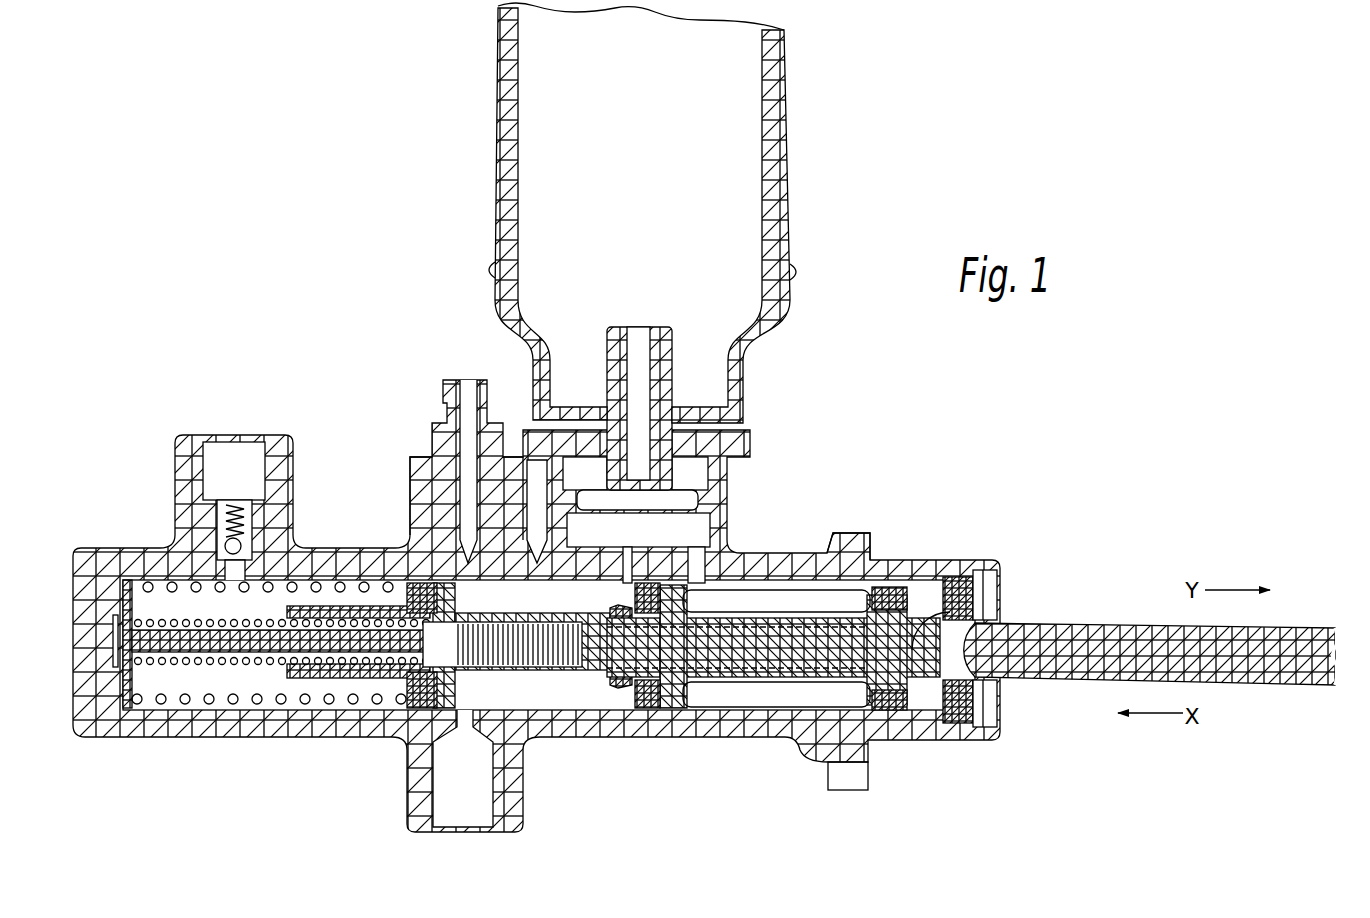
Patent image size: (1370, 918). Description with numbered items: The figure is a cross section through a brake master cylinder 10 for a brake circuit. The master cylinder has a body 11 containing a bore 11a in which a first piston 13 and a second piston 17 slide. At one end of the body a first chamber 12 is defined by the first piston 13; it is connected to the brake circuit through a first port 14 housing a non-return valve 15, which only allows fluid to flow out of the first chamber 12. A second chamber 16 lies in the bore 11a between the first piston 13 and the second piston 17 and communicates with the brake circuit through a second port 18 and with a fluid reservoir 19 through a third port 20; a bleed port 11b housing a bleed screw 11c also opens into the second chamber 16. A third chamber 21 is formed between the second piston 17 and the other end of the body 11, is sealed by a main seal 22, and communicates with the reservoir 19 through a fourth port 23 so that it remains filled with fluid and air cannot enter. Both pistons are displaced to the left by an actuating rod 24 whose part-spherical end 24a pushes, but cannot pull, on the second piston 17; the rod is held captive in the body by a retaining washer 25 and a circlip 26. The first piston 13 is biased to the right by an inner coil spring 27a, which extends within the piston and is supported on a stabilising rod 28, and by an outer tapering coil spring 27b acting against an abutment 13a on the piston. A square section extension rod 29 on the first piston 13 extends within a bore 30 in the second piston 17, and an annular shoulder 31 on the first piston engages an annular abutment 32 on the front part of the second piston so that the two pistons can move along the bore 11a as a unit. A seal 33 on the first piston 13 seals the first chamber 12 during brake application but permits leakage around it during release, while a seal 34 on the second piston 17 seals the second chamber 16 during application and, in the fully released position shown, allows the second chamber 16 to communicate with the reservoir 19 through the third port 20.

The brake master cylinder 10 is at (350, 494).
The body 11 is at (332, 562).
The bore 11a is at (285, 708).
The bleed port 11b is at (422, 492).
The bleed screw 11c is at (440, 447).
The first chamber 12 is at (153, 681).
The first piston 13 is at (455, 683).
The abutment 13a is at (408, 692).
The first port 14 is at (232, 462).
The non-return valve 15 is at (226, 548).
The second chamber 16 is at (565, 686).
The second piston 17 is at (705, 690).
The second port 18 is at (463, 805).
The fluid reservoir 19 is at (628, 171).
The third port 20 is at (628, 568).
The third chamber 21 is at (785, 692).
The main seal 22 is at (888, 595).
The fourth port 23 is at (733, 563).
The actuating rod 24 is at (1110, 640).
The part-spherical end 24a is at (972, 692).
The retaining washer 25 is at (966, 580).
The circlip 26 is at (985, 577).
The inner coil spring 27a is at (243, 688).
The outer tapering coil spring 27b is at (183, 703).
The stabilising rod 28 is at (135, 640).
The square section extension rod 29 is at (784, 600).
The bore 30 is at (880, 688).
The annular shoulder 31 is at (612, 615).
The annular abutment 32 is at (645, 700).
The seal 33 is at (416, 590).
The seal 34 is at (692, 570).